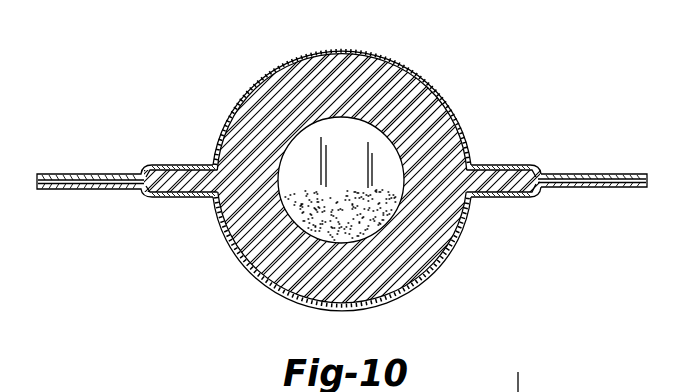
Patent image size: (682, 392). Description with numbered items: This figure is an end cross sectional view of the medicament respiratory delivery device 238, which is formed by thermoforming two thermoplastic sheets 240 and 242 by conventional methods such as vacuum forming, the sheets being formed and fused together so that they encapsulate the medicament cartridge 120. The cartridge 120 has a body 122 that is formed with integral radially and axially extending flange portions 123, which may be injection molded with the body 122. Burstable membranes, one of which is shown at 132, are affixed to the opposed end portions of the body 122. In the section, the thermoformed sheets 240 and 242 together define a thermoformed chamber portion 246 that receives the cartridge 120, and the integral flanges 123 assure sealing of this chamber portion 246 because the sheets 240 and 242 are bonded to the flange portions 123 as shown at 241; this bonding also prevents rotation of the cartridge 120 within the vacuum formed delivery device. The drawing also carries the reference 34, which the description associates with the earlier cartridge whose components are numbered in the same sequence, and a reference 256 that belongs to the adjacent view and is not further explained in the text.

The medicament respiratory delivery device 238 is at (201, 89).
The thermoformed chamber portion 246 is at (327, 46).
The body 122 is at (421, 92).
The burstable membrane 132 is at (384, 157).
The integral flange portions 123 is at (174, 163).
The medicament cartridge 120 is at (250, 243).
The fill material 34 is at (361, 228).
The thermoplastic sheet 240 is at (574, 172).
The bond 241 is at (500, 193).
The thermoplastic sheet 242 is at (586, 188).
The component of adjacent figure 256 is at (551, 391).